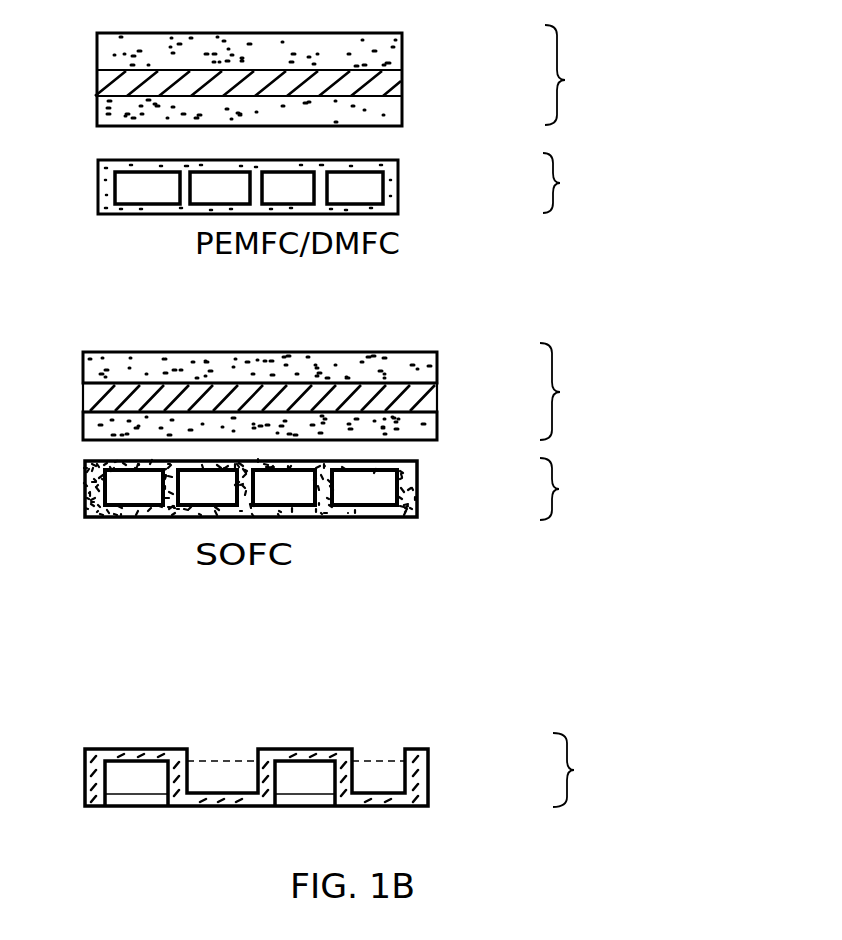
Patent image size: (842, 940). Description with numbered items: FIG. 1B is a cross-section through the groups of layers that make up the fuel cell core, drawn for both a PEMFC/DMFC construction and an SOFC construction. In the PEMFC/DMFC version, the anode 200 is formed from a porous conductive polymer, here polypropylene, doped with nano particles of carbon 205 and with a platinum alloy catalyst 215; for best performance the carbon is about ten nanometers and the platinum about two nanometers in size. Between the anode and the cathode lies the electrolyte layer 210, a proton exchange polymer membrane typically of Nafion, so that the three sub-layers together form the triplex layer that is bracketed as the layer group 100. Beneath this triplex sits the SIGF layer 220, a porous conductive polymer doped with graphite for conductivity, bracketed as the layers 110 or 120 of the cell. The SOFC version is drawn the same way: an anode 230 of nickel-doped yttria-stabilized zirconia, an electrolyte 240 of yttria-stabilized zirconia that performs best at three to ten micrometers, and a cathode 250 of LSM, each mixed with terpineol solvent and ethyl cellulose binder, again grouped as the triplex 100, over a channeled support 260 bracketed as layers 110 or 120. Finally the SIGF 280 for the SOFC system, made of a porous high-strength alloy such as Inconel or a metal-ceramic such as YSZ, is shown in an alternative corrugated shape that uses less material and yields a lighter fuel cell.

The membrane electrode assembly / cell stack (FIG. 1A) 100 is at (565, 80).
The flow field plate (FIG. 1A) 110 is at (595, 767).
The flow field plate (FIG. 1A) 120 is at (738, 770).
The anode 200 is at (105, 48).
The nano particles of carbon 205 is at (140, 45).
The electrolyte layer 210 is at (402, 83).
The platinum alloy catalyst 215 is at (333, 58).
The SIGF layer 220 is at (388, 187).
The anode 230 is at (425, 370).
The electrolyte 240 is at (430, 400).
The cathode 250 is at (430, 428).
The SOFC flow field plate with channels 260 is at (417, 503).
The SIGF 280 is at (430, 776).